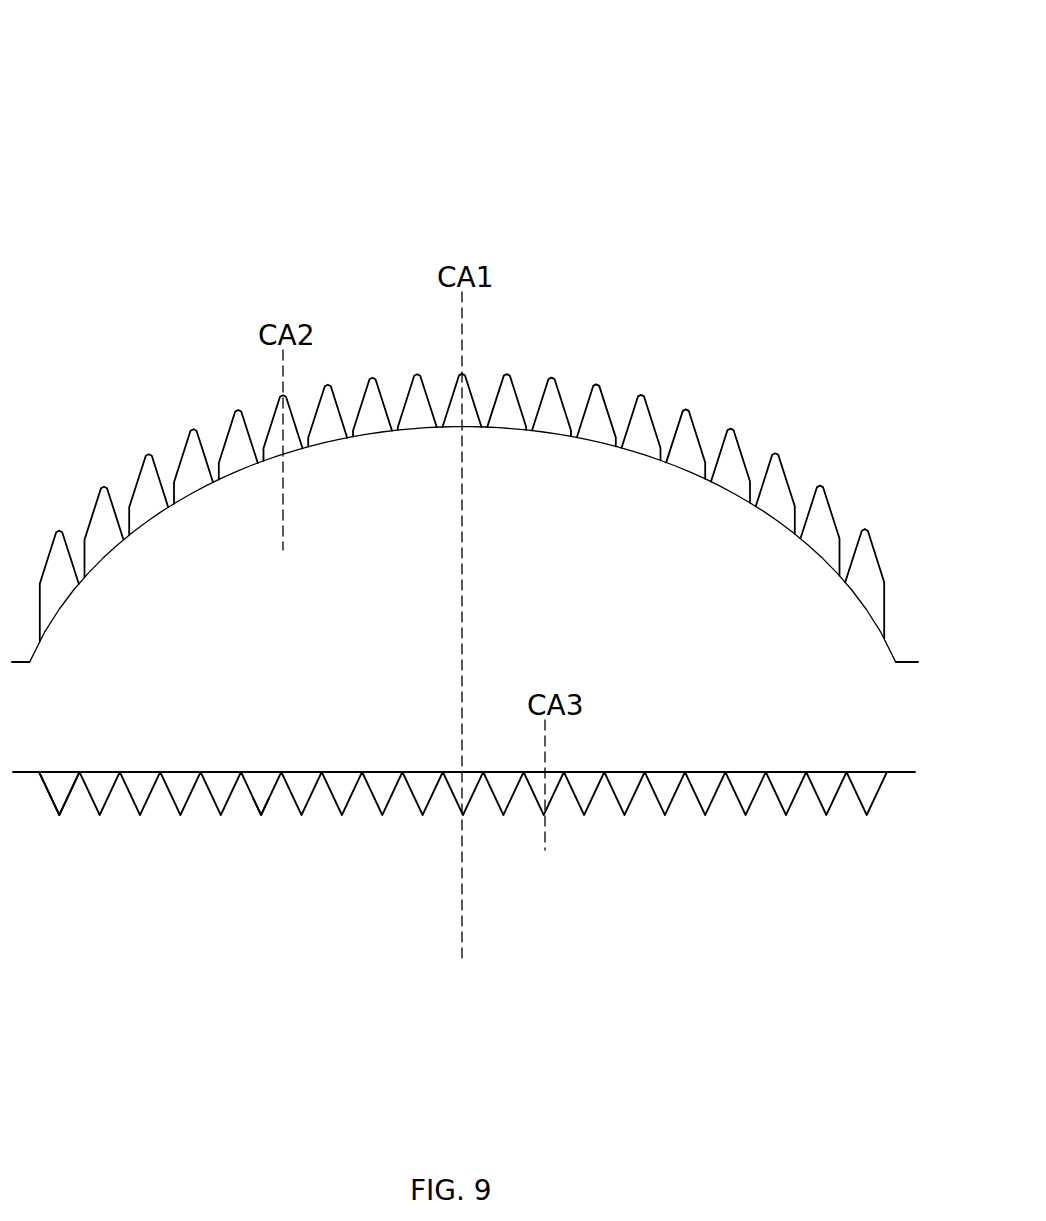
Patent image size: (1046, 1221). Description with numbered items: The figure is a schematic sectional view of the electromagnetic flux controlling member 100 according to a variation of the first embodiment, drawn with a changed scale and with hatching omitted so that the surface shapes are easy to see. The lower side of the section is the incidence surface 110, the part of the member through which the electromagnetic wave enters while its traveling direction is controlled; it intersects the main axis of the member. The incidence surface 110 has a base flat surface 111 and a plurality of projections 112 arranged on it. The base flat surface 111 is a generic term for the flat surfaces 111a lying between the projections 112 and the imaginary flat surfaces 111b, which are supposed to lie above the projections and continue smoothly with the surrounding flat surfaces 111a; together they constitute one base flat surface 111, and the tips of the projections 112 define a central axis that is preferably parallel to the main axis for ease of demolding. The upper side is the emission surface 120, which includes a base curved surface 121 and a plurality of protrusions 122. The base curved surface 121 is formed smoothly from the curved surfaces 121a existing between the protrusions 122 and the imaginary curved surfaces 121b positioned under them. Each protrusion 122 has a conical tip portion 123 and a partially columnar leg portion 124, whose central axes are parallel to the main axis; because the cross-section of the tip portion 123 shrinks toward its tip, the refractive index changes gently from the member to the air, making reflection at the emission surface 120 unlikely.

The electromagnetic flux controlling member 100 is at (82, 45).
The incidence surface 110 is at (368, 846).
The base flat surface 111 is at (150, 853).
The flat surface 111a is at (23, 773).
The imaginary flat surface 111b is at (97, 773).
The projection 112 is at (260, 815).
The emission surface 120 is at (782, 413).
The base curved surface 121 is at (923, 910).
The curved surface 121a is at (896, 663).
The imaginary curved surface 121b is at (859, 603).
The protrusion 122 is at (107, 491).
The tip portion 123 is at (69, 578).
The leg portion 124 is at (40, 607).